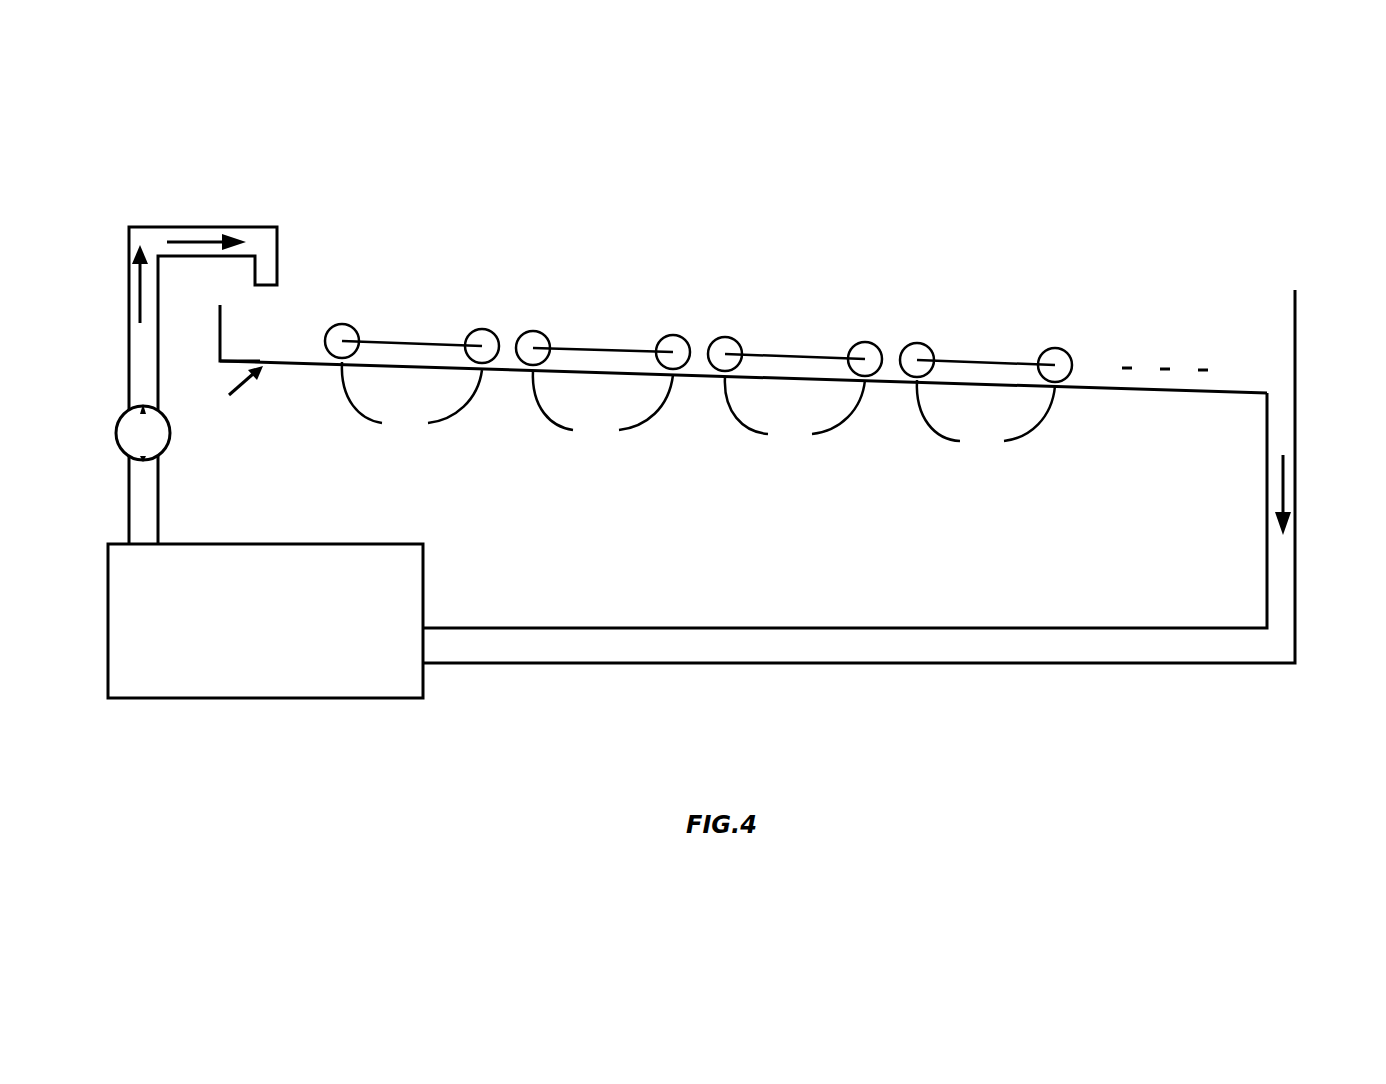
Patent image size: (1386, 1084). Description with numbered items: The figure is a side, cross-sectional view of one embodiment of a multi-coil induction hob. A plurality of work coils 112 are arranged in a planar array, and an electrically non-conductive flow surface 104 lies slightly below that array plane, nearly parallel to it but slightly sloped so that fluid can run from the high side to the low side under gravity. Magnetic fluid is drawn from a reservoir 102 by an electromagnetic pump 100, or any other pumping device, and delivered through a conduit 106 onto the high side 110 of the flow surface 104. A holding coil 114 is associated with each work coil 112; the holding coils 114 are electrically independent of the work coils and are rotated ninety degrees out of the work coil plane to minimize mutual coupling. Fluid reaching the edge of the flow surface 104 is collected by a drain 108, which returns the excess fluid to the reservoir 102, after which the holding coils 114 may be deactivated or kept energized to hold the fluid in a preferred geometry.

The electromagnetic pump 100 is at (119, 422).
The reservoir 102 is at (405, 543).
The flow surface 104 is at (1218, 394).
The conduit 106 is at (195, 226).
The drain 108 is at (1280, 446).
The high side 110 is at (239, 373).
The work coils 112 is at (395, 341).
The holding coils 114 is at (698, 410).